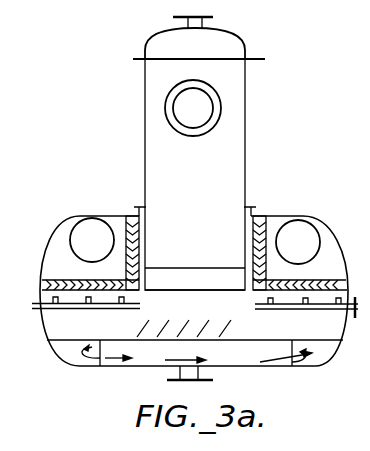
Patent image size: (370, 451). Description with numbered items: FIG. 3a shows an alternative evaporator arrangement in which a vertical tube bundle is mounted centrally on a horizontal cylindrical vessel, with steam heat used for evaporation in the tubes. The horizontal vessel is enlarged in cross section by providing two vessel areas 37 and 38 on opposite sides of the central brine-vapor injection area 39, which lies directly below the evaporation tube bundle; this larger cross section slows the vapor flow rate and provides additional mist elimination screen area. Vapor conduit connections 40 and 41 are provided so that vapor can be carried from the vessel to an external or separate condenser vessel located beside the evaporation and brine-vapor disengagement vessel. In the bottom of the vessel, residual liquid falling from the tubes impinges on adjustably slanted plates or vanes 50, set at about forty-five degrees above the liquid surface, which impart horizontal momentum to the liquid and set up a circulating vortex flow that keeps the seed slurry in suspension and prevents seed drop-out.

The vessel area 37 is at (76, 334).
The vessel area 38 is at (324, 337).
The central brine-vapor injection area 39 is at (179, 314).
The vapor conduit connection 40 is at (103, 250).
The vapor conduit connection 41 is at (309, 252).
The adjustably slanted plates or vanes 50 is at (246, 337).